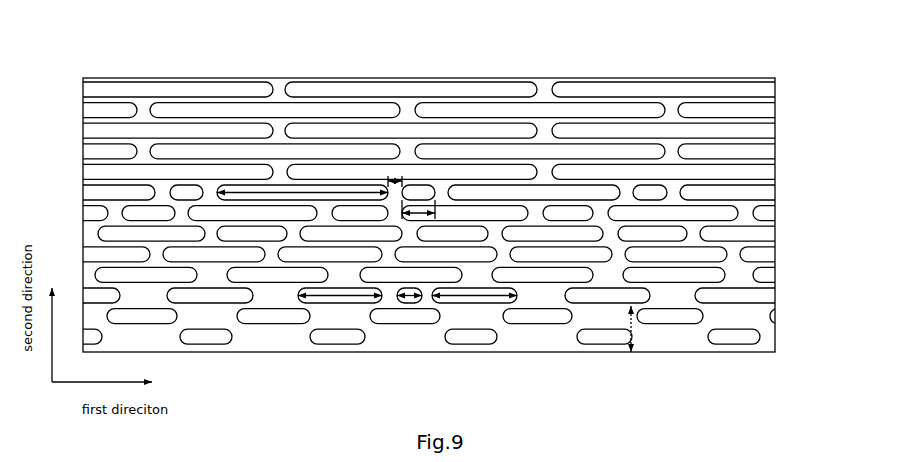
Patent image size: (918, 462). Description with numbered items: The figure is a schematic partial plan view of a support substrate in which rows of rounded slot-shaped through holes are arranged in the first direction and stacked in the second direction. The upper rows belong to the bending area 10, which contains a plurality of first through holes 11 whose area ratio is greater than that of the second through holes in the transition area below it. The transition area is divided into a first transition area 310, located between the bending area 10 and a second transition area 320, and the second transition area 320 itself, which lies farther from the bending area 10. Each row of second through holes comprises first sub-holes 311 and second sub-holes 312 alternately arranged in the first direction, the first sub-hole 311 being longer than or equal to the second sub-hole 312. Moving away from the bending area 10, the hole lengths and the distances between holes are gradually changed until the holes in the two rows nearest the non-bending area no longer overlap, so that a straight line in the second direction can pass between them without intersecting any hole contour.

The first through holes 11 is at (213, 88).
The bending area 10 is at (788, 80).
The first transition area 310 is at (788, 178).
The second transition area 320 is at (788, 267).
The first sub-hole 311 is at (306, 117).
The second sub-hole 312 is at (459, 119).